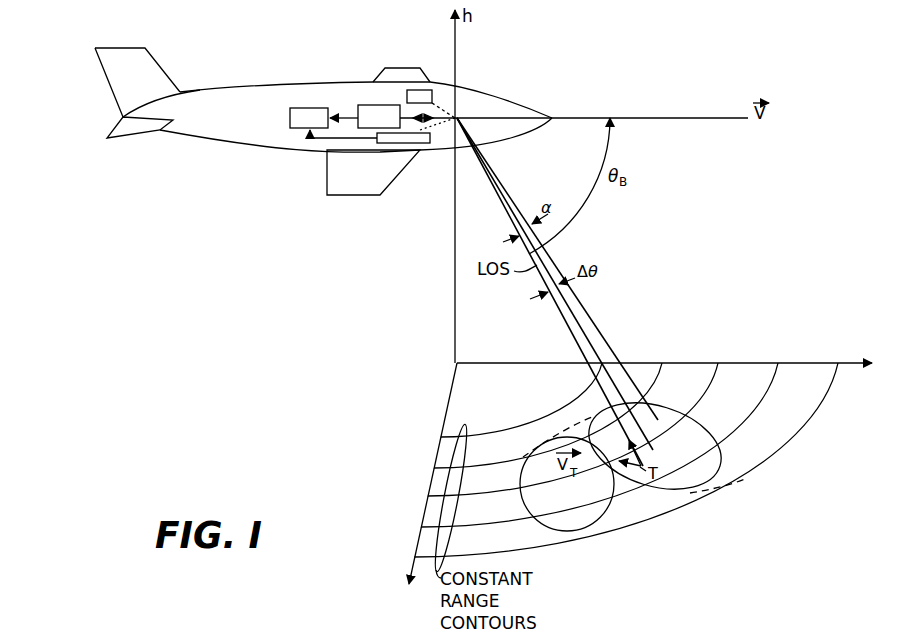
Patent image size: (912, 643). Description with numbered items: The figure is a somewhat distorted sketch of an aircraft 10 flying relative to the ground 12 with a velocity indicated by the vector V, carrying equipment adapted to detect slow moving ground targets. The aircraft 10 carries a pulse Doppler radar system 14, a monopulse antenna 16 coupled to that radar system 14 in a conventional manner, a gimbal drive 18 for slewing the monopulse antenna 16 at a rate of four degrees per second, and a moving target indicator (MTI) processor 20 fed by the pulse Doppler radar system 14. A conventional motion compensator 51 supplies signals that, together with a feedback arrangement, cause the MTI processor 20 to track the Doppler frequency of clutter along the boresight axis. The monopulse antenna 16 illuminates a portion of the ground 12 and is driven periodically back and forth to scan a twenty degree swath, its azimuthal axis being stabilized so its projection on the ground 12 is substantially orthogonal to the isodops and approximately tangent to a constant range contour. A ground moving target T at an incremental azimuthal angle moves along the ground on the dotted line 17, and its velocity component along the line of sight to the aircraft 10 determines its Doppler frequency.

The aircraft 10 is at (507, 103).
The ground 12 is at (748, 404).
The pulse Doppler radar system 14 is at (364, 105).
The monopulse antenna 16 is at (472, 105).
The dotted line 17 is at (611, 484).
The gimbal drive 18 is at (413, 90).
The moving target indicator (MTI) processor 20 is at (290, 118).
The motion compensator 51 is at (428, 145).